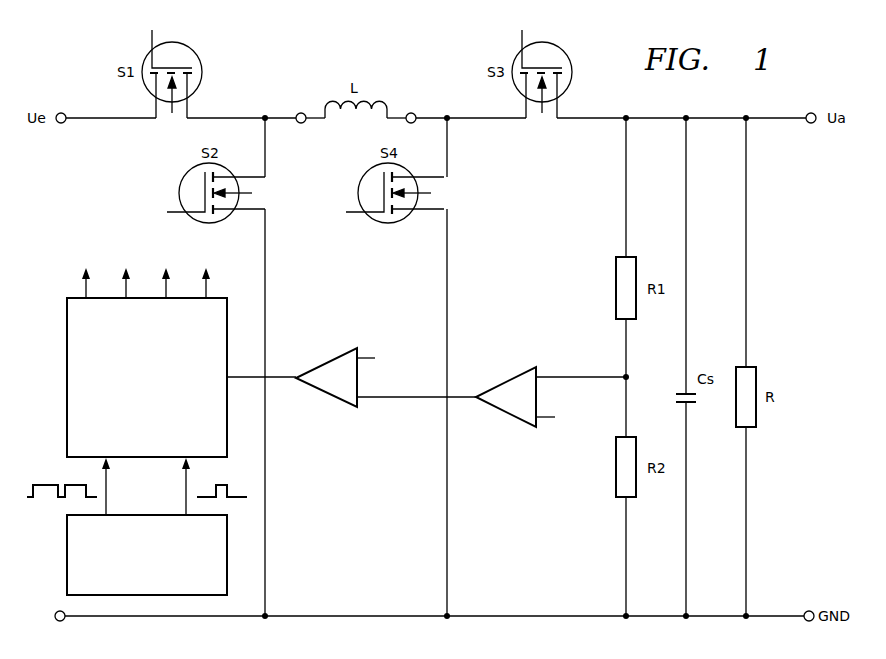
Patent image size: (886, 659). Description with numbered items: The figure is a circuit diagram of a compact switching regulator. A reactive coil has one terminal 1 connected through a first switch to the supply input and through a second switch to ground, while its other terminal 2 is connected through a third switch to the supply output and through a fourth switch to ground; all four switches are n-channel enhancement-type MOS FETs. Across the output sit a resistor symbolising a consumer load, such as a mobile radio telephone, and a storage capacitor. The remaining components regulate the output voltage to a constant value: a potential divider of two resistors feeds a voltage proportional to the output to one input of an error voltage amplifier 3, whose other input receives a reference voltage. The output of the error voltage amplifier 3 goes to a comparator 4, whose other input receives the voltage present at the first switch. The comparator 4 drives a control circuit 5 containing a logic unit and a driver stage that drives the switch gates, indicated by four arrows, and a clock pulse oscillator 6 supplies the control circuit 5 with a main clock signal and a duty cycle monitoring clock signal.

The terminal of the reactive coil 1 is at (300, 109).
The other terminal of the reactive coil 2 is at (412, 109).
The error voltage amplifier 3 is at (504, 383).
The comparator 4 is at (326, 363).
The control circuit 5 is at (67, 378).
The clock pulse oscillator 6 is at (67, 555).